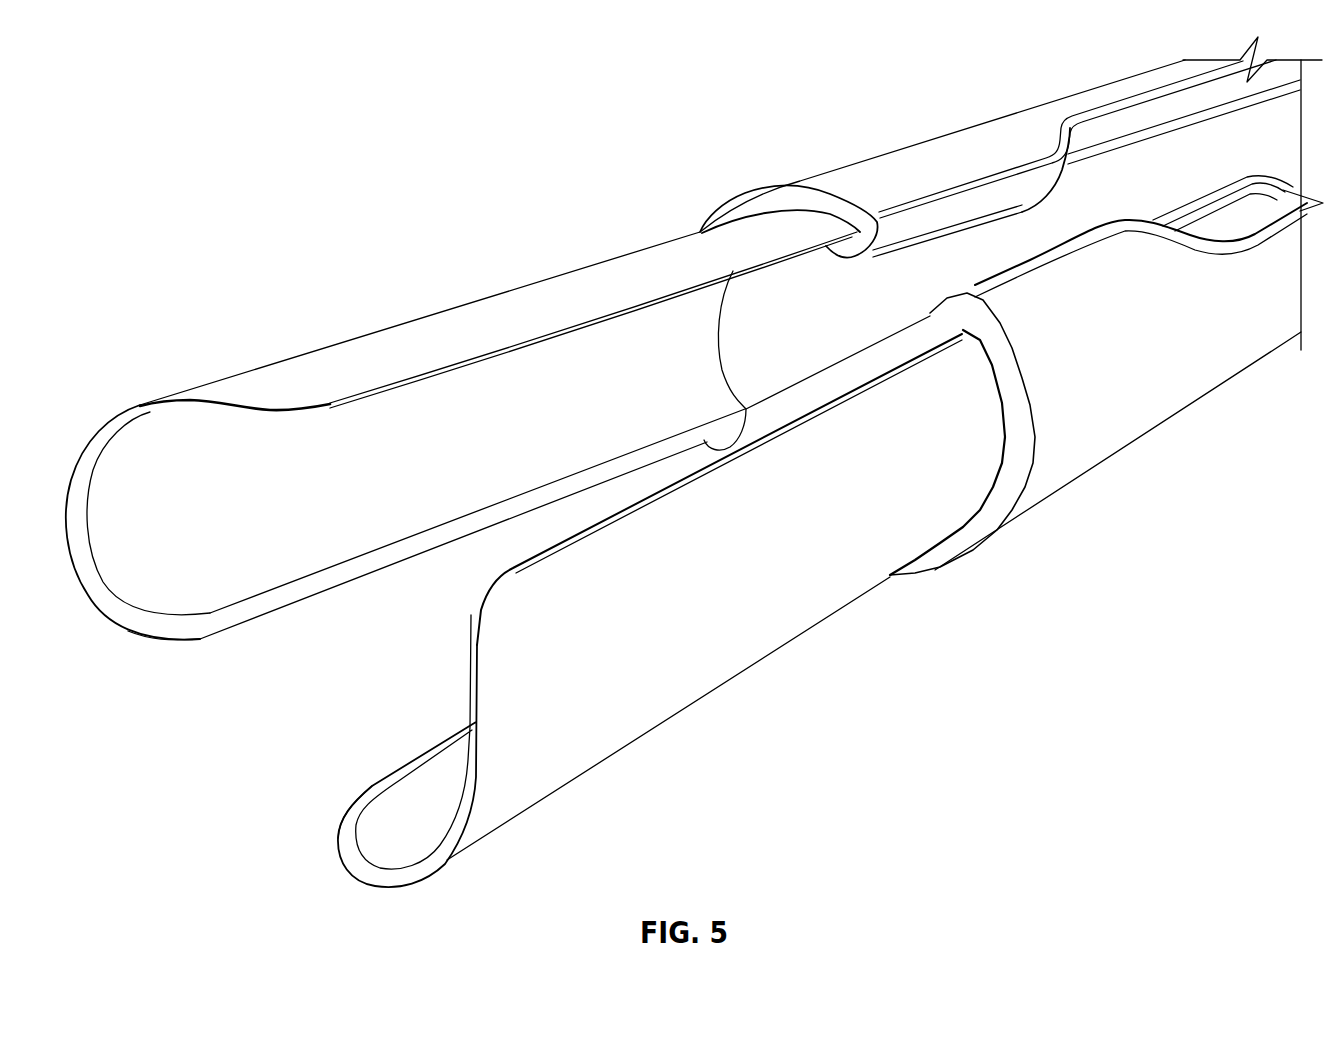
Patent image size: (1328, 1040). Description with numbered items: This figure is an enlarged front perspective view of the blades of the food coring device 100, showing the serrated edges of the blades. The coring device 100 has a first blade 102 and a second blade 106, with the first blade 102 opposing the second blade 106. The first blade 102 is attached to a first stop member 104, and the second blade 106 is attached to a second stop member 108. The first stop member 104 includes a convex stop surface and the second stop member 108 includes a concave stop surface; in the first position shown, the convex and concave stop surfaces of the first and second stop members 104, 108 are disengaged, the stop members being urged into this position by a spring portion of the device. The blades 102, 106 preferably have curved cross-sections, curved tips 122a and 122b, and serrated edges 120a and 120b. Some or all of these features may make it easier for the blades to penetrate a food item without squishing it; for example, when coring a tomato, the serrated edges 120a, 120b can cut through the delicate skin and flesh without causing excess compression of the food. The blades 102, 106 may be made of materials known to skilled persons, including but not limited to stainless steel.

The coring device 100 is at (675, 498).
The first blade 102 is at (330, 355).
The first stop member 104 is at (950, 152).
The second blade 106 is at (650, 708).
The second stop member 108 is at (1118, 428).
The serrated edge 120a is at (72, 470).
The serrated edge 120b is at (373, 888).
The curved tip 122a is at (167, 632).
The curved tip 122b is at (362, 817).